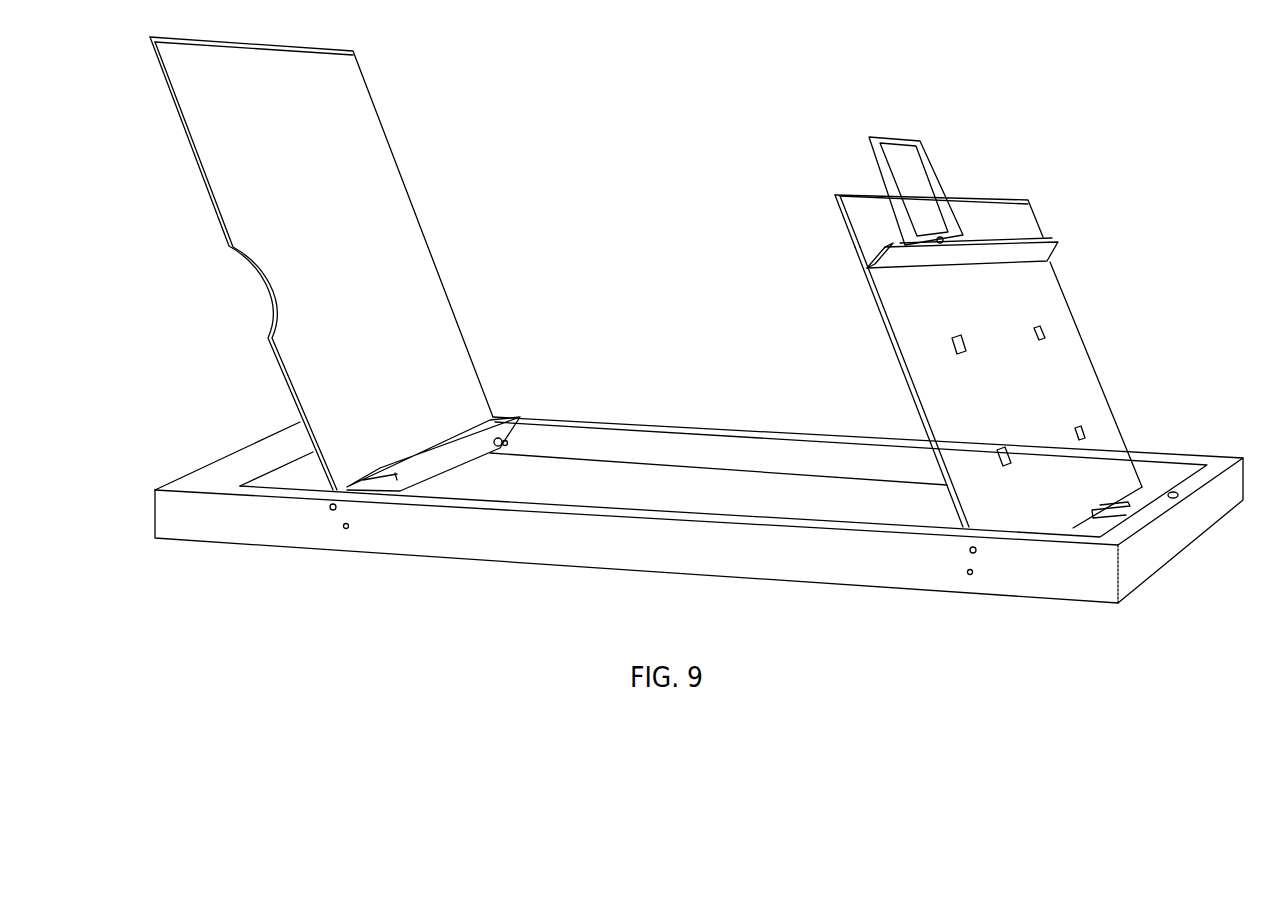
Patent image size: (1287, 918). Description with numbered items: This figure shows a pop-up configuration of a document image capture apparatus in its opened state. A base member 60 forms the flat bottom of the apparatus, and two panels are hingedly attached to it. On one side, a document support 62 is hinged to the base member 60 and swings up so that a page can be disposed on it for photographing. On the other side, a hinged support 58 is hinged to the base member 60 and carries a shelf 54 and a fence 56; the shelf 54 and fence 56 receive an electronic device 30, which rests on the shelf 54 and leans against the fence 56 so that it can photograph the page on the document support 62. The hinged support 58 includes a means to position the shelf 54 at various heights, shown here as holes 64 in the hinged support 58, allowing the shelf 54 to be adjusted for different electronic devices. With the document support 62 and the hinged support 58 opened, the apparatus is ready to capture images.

The electronic device 30 is at (918, 153).
The shelf 54 is at (1060, 243).
The fence 56 is at (1020, 215).
The hinged support 58 is at (1077, 350).
The base member 60 is at (1193, 532).
The document support 62 is at (385, 205).
The holes 64 is at (1080, 431).